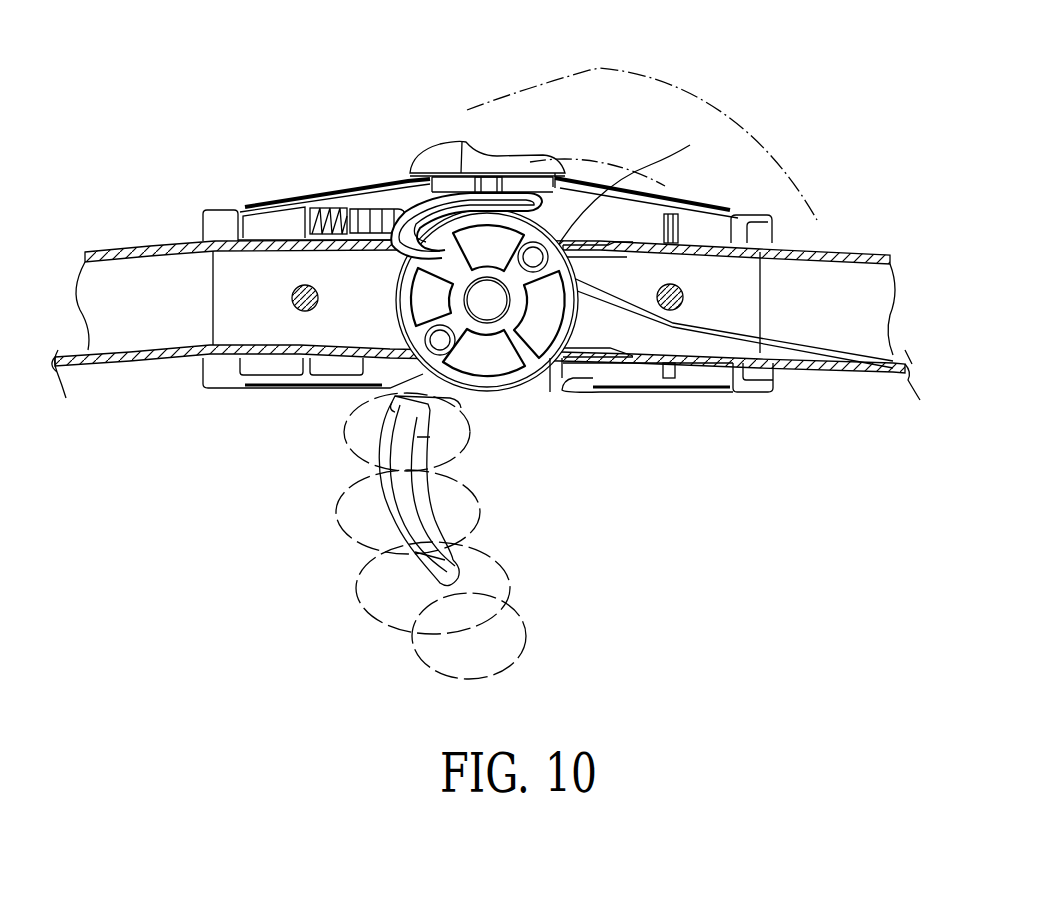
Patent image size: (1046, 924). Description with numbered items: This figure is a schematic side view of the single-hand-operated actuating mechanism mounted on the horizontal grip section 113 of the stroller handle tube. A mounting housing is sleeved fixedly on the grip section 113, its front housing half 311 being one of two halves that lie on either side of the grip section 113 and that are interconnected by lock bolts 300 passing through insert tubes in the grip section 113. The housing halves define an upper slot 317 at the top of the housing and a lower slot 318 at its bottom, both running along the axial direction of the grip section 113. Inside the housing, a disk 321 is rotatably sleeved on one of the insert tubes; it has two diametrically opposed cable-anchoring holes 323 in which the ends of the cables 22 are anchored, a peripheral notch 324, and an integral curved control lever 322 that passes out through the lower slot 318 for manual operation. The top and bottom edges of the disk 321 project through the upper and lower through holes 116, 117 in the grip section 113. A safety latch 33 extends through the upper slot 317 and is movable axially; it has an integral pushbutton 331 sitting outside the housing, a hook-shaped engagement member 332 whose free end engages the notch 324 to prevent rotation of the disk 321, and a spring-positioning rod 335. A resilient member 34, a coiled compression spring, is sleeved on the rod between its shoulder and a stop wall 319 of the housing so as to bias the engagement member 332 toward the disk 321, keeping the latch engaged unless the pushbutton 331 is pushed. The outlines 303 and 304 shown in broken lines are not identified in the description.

The cables 22 is at (58, 362).
The lock bolts 300 is at (292, 297).
The stop wall 319 is at (297, 200).
The resilient member 34 is at (327, 205).
The spring-positioning rod 335 is at (377, 200).
The safety latch 33 is at (525, 148).
The lever outline 303 is at (600, 68).
The pushbutton 331 is at (448, 153).
The upper slot 317 is at (470, 178).
The upper through hole 116 is at (667, 185).
The front housing half 311 is at (740, 217).
The grip section 113 is at (845, 250).
The notch 324 is at (410, 266).
The engagement member 332 is at (398, 252).
The cable-anchoring holes 323 is at (536, 255).
The disk 321 is at (487, 362).
The control lever 322 is at (403, 517).
The finger outline 304 is at (507, 610).
The lower slot 318 is at (572, 393).
The lower through hole 117 is at (597, 358).